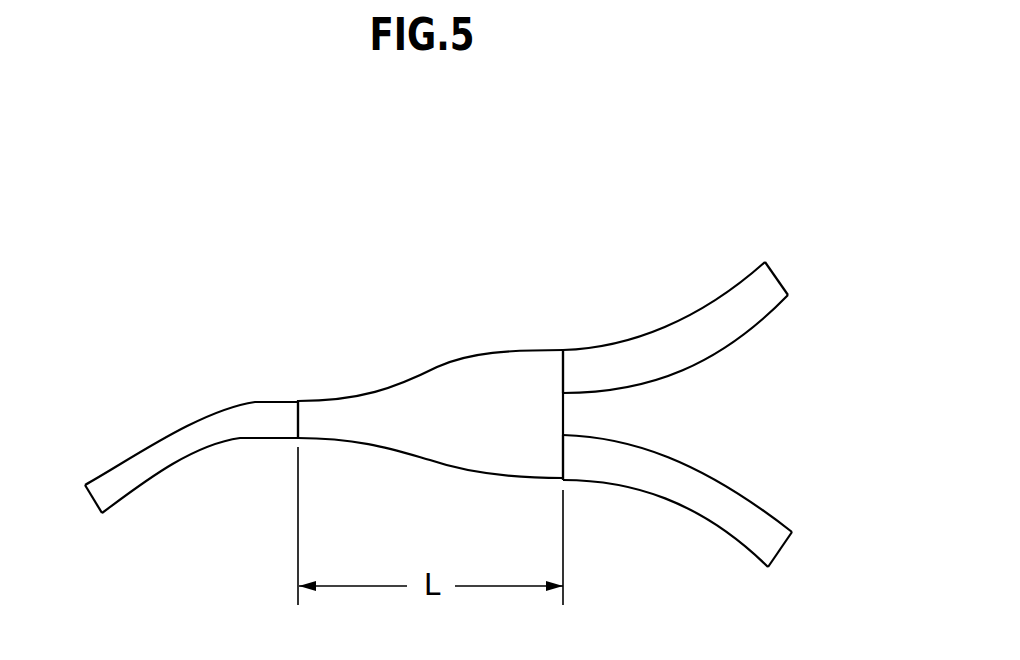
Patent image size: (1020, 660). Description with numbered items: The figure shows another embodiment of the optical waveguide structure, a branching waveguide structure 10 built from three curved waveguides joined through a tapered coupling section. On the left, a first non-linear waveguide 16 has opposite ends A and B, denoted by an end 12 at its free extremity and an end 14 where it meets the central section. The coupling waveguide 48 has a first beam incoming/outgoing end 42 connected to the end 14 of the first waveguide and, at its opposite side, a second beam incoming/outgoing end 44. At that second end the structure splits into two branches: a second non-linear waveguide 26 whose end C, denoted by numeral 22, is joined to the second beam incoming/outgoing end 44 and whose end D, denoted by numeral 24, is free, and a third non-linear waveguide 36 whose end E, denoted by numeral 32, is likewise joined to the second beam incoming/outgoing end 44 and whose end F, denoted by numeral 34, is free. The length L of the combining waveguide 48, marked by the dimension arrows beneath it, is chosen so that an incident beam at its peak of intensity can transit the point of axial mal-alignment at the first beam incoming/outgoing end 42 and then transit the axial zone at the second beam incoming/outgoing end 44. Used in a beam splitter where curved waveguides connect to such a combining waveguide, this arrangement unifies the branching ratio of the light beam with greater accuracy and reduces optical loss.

The branching waveguide structure 10 is at (310, 314).
The end A of first waveguide 12 is at (93, 502).
The end B of first waveguide 14 is at (299, 428).
The first non-linear waveguide 16 is at (174, 461).
The end C of second waveguide 22 is at (560, 378).
The end D of second waveguide 24 is at (777, 278).
The second non-linear waveguide 26 is at (691, 296).
The end E of third waveguide 32 is at (560, 452).
The end F of third waveguide 34 is at (785, 550).
The third non-linear waveguide 36 is at (693, 531).
The first beam incoming/outgoing end 42 is at (298, 415).
The second beam incoming/outgoing end 44 is at (565, 418).
The coupling waveguide 48 is at (432, 427).